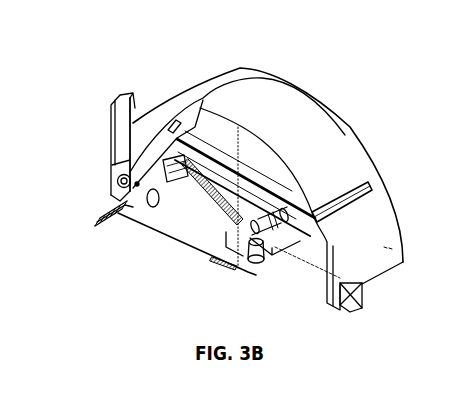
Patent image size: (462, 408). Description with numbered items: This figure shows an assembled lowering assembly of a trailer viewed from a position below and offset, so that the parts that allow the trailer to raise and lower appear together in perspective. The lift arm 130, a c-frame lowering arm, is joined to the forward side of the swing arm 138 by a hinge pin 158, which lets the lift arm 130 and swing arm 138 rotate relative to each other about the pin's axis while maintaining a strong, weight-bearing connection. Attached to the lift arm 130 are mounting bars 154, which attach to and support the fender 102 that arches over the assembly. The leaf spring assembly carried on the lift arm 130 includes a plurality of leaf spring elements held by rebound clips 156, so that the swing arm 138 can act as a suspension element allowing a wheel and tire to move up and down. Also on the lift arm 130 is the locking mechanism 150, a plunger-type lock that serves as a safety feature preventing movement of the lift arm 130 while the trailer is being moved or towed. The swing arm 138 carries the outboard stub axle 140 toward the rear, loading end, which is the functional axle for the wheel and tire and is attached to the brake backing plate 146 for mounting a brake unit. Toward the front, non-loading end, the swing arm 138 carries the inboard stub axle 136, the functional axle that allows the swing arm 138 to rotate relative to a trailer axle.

The fender 102 is at (319, 122).
The lift arm 130 is at (136, 93).
The inboard stub axle 136 is at (153, 207).
The swing arm 138 is at (199, 247).
The outboard stub axle 140 is at (283, 249).
The brake backing plate 146 is at (258, 263).
The locking mechanism 150 is at (361, 302).
The mounting bars 154 is at (353, 192).
The rebound clips 156 is at (177, 136).
The hinge pin 158 is at (114, 198).